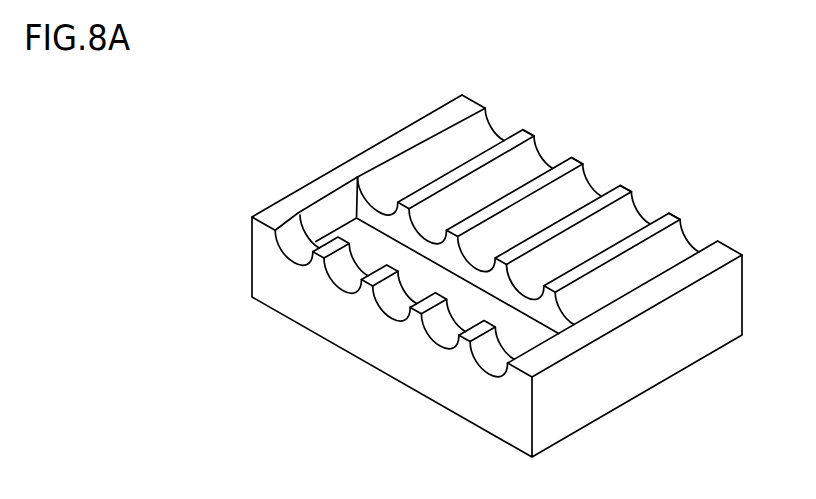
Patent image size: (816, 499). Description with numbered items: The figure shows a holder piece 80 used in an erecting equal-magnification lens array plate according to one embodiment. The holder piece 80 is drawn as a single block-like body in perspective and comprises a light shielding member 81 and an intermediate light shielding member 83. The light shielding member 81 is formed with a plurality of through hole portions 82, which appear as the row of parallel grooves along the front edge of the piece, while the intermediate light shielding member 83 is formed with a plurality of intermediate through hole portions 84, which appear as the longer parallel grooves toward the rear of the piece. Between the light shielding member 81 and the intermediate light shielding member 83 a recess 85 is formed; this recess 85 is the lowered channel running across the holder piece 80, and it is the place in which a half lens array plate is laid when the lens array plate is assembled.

The holder piece 80 is at (497, 284).
The light shielding member 81 is at (414, 368).
The through hole portions 82 is at (345, 277).
The intermediate light shielding member 83 is at (572, 161).
The intermediate through hole portions 84 is at (631, 221).
The recess 85 is at (543, 337).